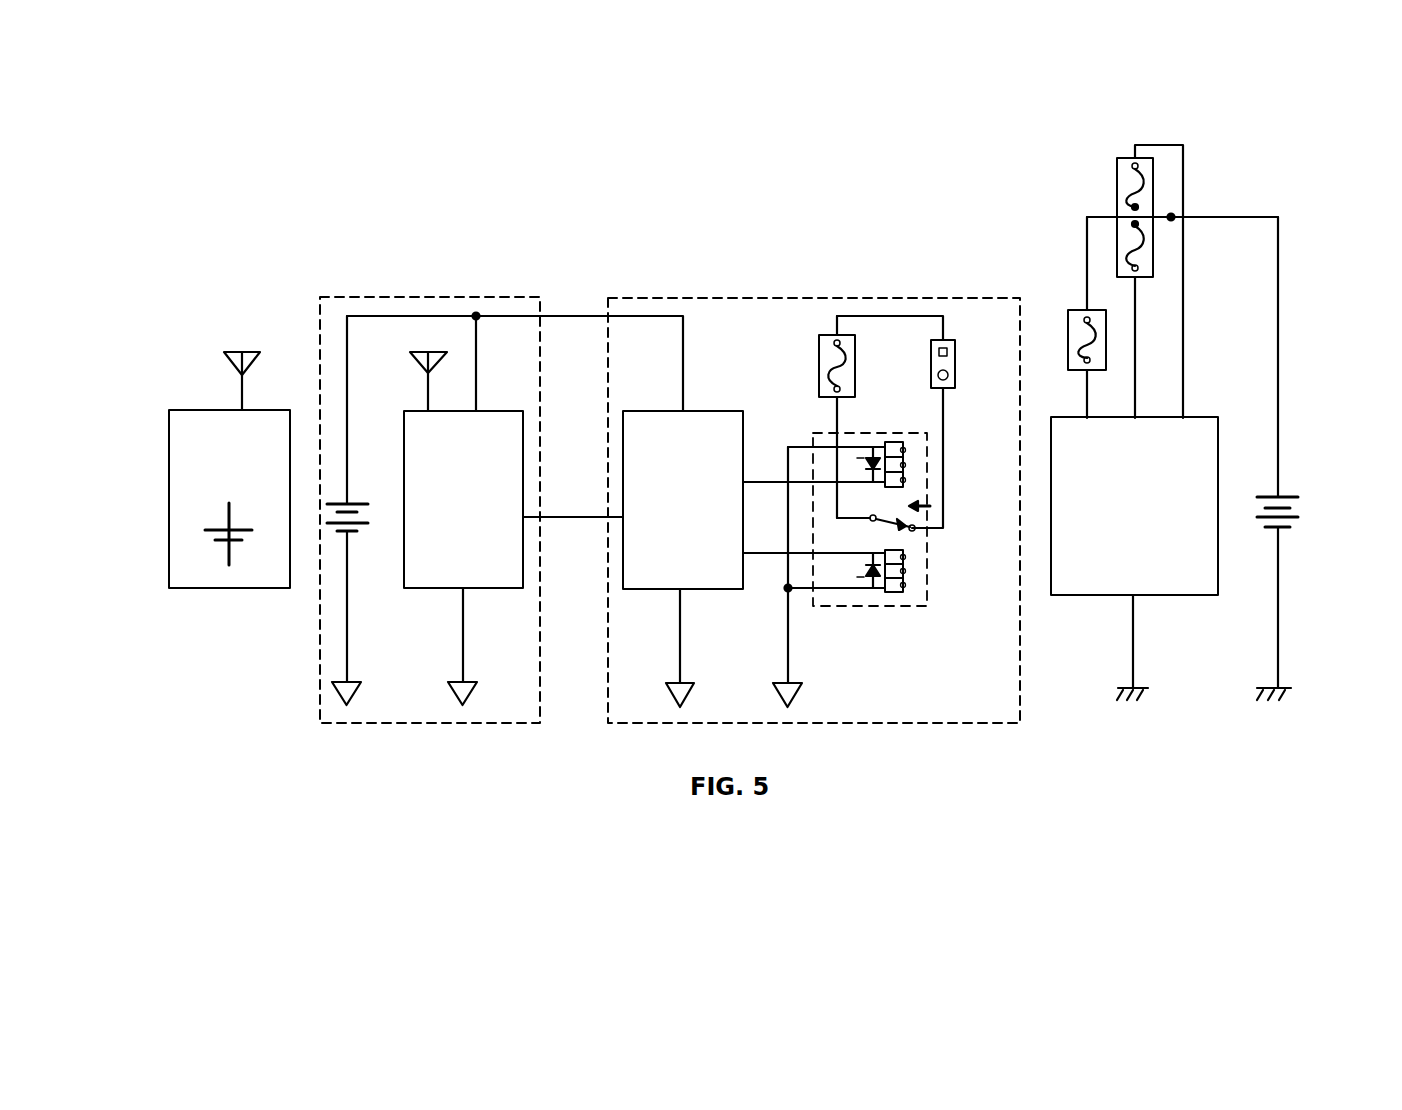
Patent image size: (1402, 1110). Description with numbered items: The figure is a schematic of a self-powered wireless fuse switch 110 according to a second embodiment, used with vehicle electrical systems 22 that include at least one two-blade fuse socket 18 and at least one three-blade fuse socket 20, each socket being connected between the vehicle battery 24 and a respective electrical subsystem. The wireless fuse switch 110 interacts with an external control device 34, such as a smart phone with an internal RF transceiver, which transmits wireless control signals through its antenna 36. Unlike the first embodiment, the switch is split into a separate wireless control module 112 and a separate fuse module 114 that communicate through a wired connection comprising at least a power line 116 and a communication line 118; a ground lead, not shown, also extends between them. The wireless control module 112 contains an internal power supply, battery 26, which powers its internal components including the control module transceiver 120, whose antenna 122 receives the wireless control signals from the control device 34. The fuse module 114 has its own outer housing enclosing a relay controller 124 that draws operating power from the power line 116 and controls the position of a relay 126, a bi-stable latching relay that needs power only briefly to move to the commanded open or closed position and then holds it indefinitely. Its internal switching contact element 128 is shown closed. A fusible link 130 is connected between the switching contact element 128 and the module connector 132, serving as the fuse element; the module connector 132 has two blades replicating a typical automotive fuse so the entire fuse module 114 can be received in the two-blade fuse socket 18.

The two-blade fuse socket 18 is at (1080, 307).
The three-blade fuse socket 20 is at (1117, 175).
The vehicle electrical systems 22 is at (1083, 600).
The vehicle battery 24 is at (1290, 493).
The battery 26 is at (356, 546).
The control device 34 is at (211, 590).
The antenna 36 is at (240, 392).
The self-powered wireless fuse switch 110 is at (859, 234).
The wireless control module 112 is at (402, 293).
The fuse module 114 is at (658, 296).
The power line 116 is at (566, 314).
The communication line 118 is at (561, 515).
The control module transceiver 120 is at (498, 410).
The antenna 122 is at (427, 390).
The relay controller 124 is at (703, 410).
The relay 126 is at (903, 606).
The switching contact element 128 is at (893, 517).
The fusible link 130 is at (856, 374).
The module connector 132 is at (957, 362).